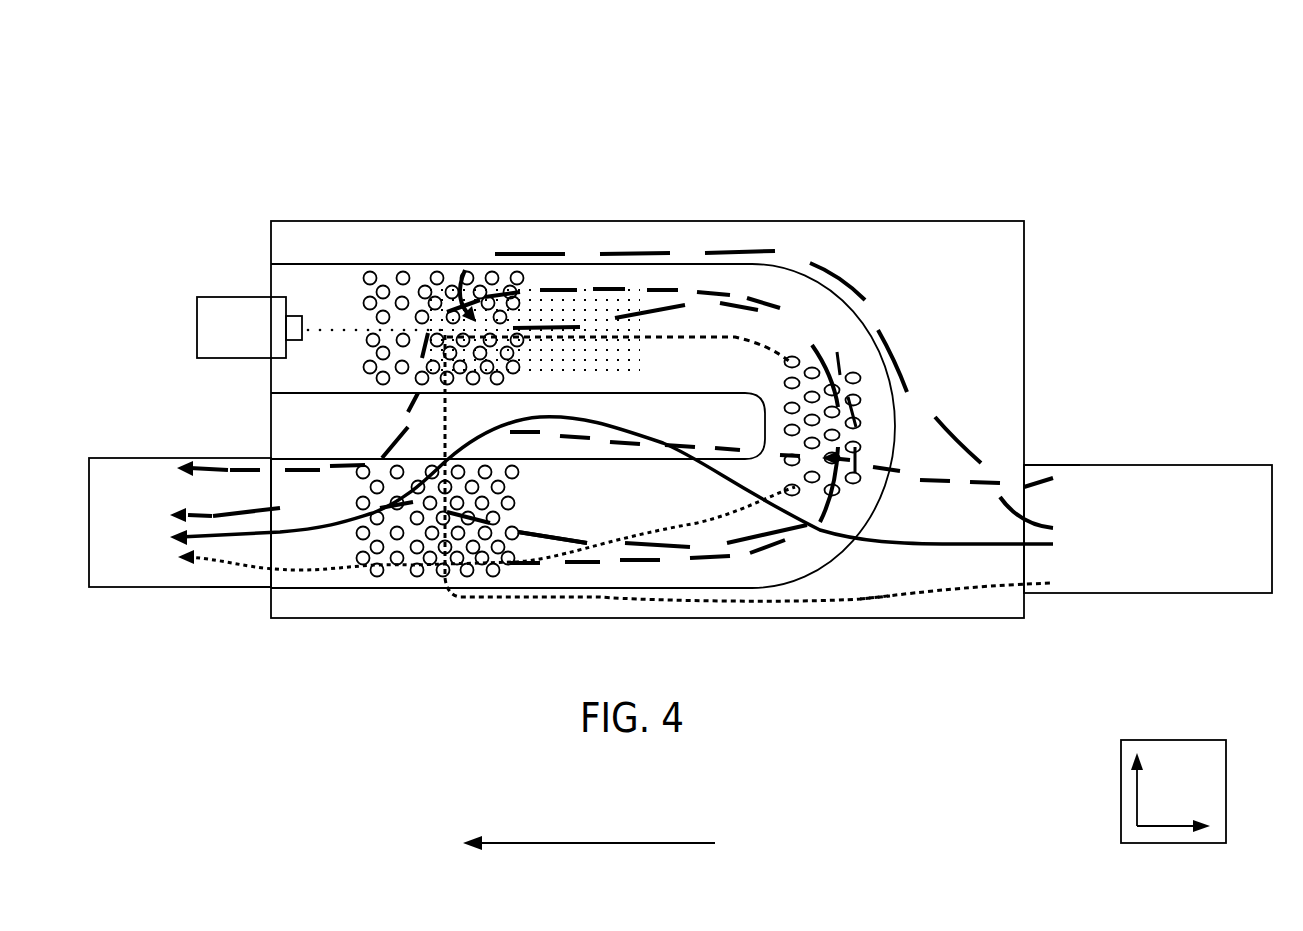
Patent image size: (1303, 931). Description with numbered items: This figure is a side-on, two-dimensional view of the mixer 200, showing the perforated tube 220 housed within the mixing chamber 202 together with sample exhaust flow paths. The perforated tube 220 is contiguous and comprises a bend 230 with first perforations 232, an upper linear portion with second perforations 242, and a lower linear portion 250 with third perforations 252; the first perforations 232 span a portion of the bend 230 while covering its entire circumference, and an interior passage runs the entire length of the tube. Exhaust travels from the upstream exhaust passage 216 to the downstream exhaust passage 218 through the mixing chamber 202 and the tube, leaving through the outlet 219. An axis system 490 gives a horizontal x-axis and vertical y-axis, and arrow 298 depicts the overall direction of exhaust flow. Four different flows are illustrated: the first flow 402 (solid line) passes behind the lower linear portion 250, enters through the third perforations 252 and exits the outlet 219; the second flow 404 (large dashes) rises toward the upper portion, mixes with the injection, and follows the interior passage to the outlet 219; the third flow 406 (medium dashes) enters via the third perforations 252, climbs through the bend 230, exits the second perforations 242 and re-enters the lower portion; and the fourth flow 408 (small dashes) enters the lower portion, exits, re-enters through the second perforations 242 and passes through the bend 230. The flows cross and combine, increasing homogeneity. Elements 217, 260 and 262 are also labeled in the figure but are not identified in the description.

The mixer 200 is at (1106, 96).
The mixing chamber 202 is at (898, 221).
The upstream exhaust passage 216 is at (1148, 529).
The outlet opening 217 is at (1027, 467).
The downstream exhaust passage 218 is at (442, 522).
The outlet 219 is at (266, 578).
The perforated tube 220 is at (900, 258).
The bend 230 is at (885, 320).
The first perforations 232 is at (750, 370).
The second perforations 242 is at (569, 250).
The lower linear portion 250 is at (512, 602).
The third perforations 252 is at (548, 514).
The injector 260 is at (241, 327).
The injector nozzle 262 is at (302, 322).
The arrow 298 is at (650, 843).
The first flow 402 is at (905, 544).
The second flow 404 is at (950, 427).
The third flow 406 is at (925, 480).
The fourth flow 408 is at (879, 601).
The axis system 490 is at (1205, 740).